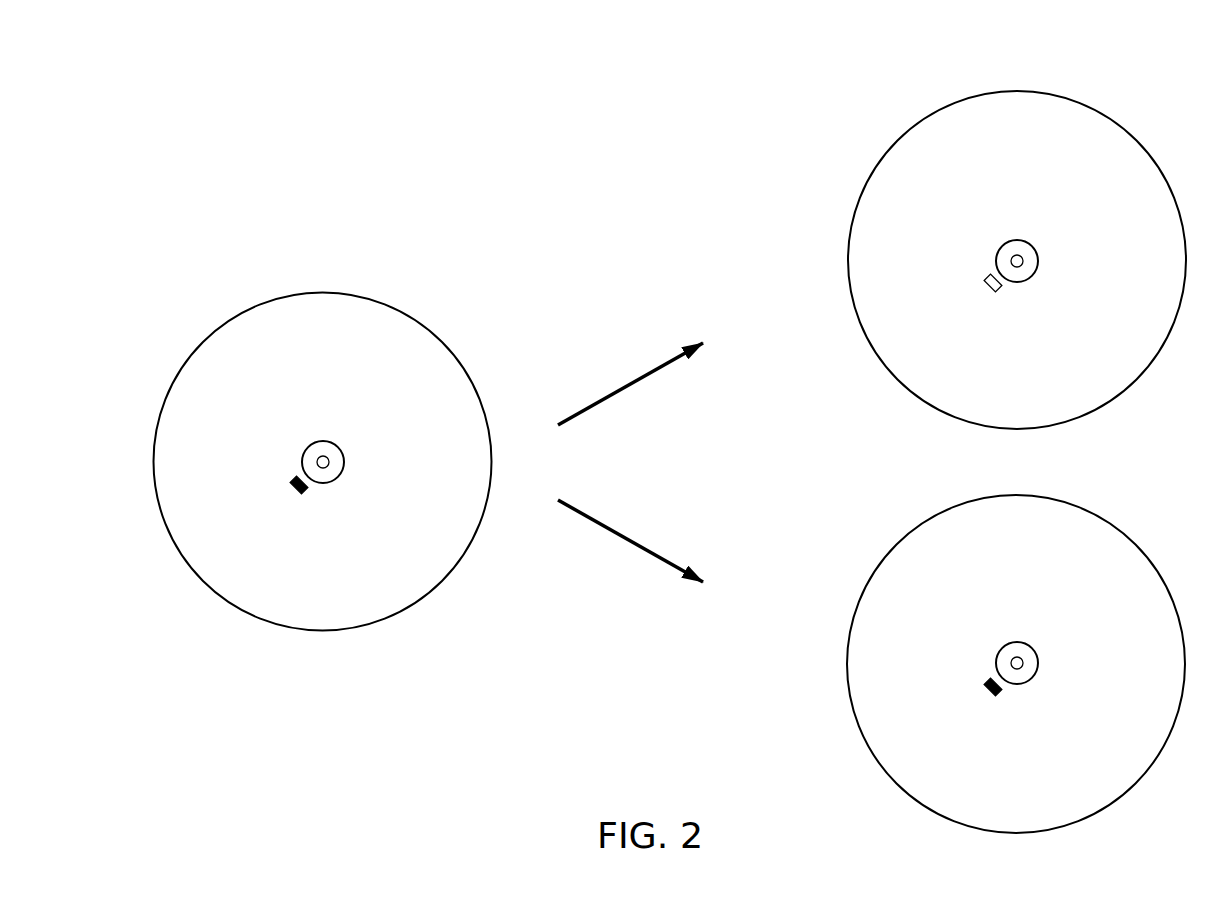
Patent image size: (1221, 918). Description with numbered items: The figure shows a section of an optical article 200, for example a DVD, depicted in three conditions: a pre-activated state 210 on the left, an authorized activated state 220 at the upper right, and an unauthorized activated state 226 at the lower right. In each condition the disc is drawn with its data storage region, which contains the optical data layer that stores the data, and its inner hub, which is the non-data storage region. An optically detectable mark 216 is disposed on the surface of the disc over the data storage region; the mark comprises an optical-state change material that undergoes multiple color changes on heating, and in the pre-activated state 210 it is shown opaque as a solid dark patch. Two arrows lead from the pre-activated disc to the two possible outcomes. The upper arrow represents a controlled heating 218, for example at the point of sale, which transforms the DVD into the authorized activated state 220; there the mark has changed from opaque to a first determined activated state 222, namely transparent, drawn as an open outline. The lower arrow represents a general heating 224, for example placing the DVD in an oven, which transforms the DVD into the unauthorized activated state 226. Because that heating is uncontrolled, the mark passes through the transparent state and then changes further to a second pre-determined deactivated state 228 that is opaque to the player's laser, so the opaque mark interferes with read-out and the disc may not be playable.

The optical article 200 is at (243, 90).
The pre-activated state 210 is at (211, 291).
The optically detectable mark 216 is at (292, 483).
The controlled heating 218 is at (627, 382).
The authorized activated state 220 is at (904, 90).
The first determined activated state 222 is at (985, 283).
The general heating 224 is at (628, 542).
The unauthorized activated state 226 is at (904, 491).
The second pre-determined deactivated state 228 is at (985, 687).